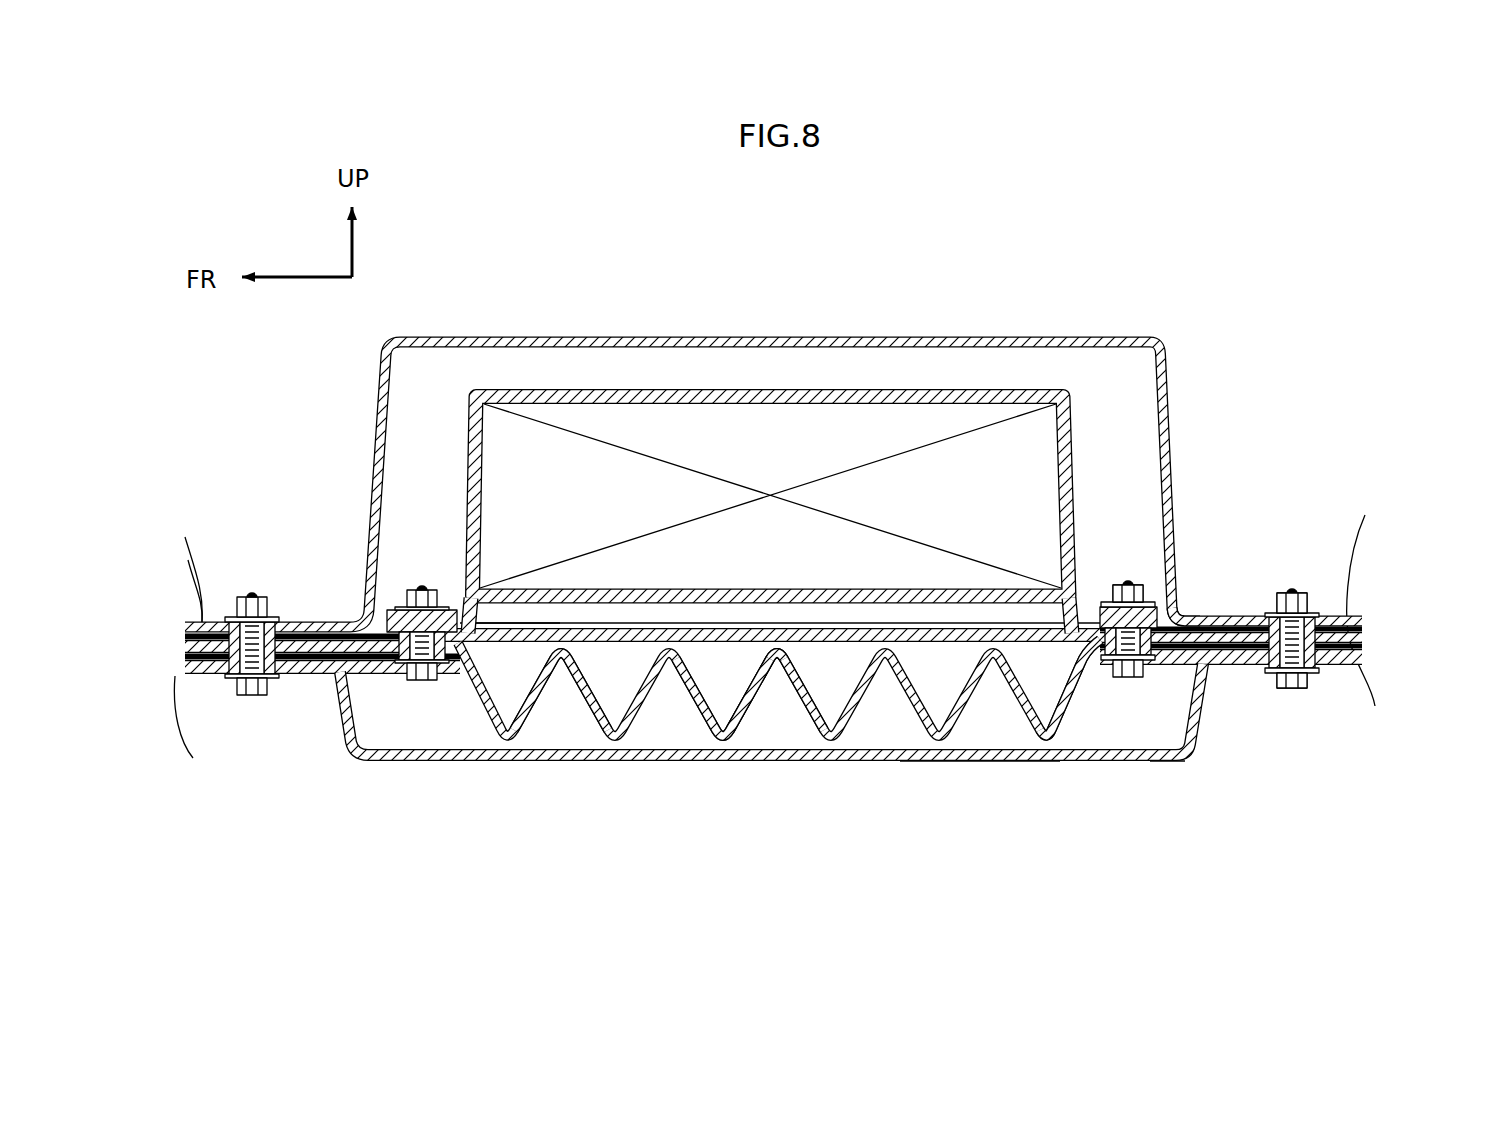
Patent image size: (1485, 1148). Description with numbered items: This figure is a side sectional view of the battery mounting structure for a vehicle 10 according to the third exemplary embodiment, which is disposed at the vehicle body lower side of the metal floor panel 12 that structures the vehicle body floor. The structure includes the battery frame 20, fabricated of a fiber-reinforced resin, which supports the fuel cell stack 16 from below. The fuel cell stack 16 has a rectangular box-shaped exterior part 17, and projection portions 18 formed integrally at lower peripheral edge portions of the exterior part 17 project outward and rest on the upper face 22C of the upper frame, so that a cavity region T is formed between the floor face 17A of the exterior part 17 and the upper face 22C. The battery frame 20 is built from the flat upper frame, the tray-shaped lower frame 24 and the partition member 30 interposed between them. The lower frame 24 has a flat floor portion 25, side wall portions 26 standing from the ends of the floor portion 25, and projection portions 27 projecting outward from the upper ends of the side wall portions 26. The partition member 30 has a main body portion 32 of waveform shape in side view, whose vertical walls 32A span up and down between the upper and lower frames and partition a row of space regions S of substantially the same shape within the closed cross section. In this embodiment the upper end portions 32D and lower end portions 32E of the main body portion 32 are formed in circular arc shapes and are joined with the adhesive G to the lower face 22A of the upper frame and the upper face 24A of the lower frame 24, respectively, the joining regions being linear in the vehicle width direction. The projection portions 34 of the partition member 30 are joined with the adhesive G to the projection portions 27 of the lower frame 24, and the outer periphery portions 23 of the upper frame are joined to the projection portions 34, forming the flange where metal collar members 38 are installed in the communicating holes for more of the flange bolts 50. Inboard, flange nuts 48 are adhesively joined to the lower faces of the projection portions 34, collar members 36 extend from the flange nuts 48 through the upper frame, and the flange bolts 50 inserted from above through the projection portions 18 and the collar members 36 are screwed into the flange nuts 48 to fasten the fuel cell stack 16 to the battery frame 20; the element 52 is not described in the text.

The battery mounting structure for a vehicle 10 is at (330, 746).
The floor panel 12 is at (746, 337).
The fuel cell stack 16 is at (853, 378).
The exterior part 17 is at (1058, 387).
The floor face 17A is at (562, 621).
The projection portions 18 is at (1173, 610).
The battery frame 20 is at (344, 768).
The lower face 22A is at (838, 655).
The upper face 22C is at (972, 640).
The outer periphery portions 23 is at (1362, 627).
The lower frame 24 is at (655, 768).
The upper face 24A is at (1180, 762).
The floor portion 25 is at (983, 763).
The side wall portions 26 is at (1197, 720).
The projection portions 27 is at (1365, 662).
The partition member 30 is at (1080, 710).
The main body portion 32 is at (460, 745).
The vertical walls 32A is at (540, 725).
The upper end portions 32D is at (777, 645).
The lower end portions 32E is at (730, 750).
The projection portions 34 is at (1360, 645).
The collar members 36 is at (408, 663).
The collar members 38 is at (1308, 689).
The flange nuts 48 is at (1122, 678).
The flange bolts 50 is at (1128, 585).
The nut 52 is at (1315, 593).
The adhesive G is at (707, 640).
The space regions S is at (885, 708).
The cavity region T is at (516, 619).